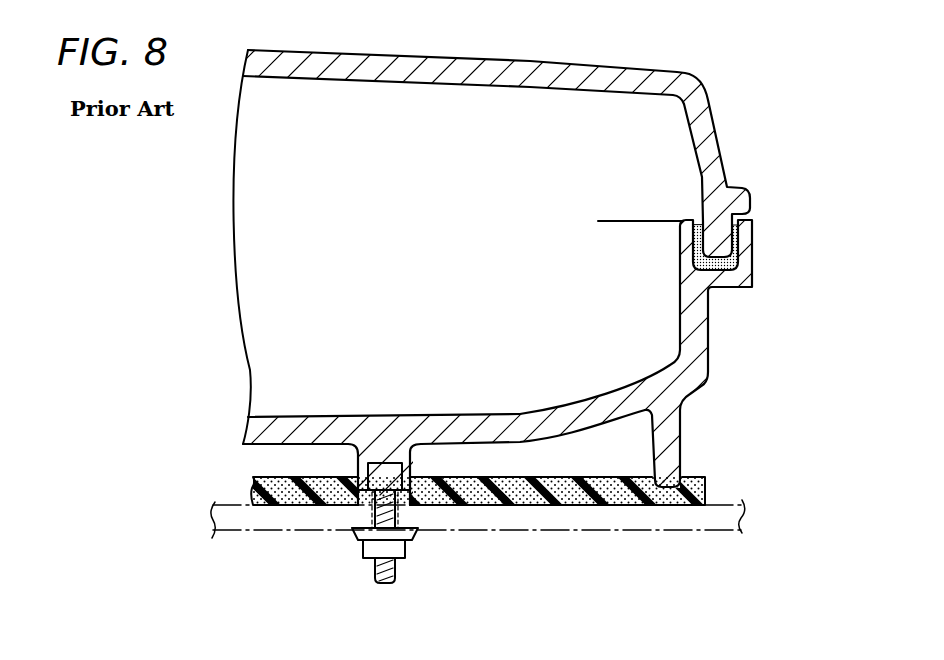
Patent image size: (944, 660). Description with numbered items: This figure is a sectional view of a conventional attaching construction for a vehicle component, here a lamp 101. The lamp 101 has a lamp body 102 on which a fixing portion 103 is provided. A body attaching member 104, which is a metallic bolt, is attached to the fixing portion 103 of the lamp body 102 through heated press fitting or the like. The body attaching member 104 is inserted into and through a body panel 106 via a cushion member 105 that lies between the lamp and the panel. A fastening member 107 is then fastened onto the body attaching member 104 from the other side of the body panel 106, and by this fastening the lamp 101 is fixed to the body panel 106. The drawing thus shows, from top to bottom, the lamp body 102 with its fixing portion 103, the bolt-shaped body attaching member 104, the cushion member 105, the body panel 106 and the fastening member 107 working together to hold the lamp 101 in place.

The lamp 101 is at (762, 102).
The lamp body 102 is at (698, 329).
The fixing portion 103 is at (347, 444).
The body attaching member 104 is at (389, 470).
The cushion member 105 is at (625, 500).
The body panel 106 is at (540, 517).
The fastening member 107 is at (405, 549).